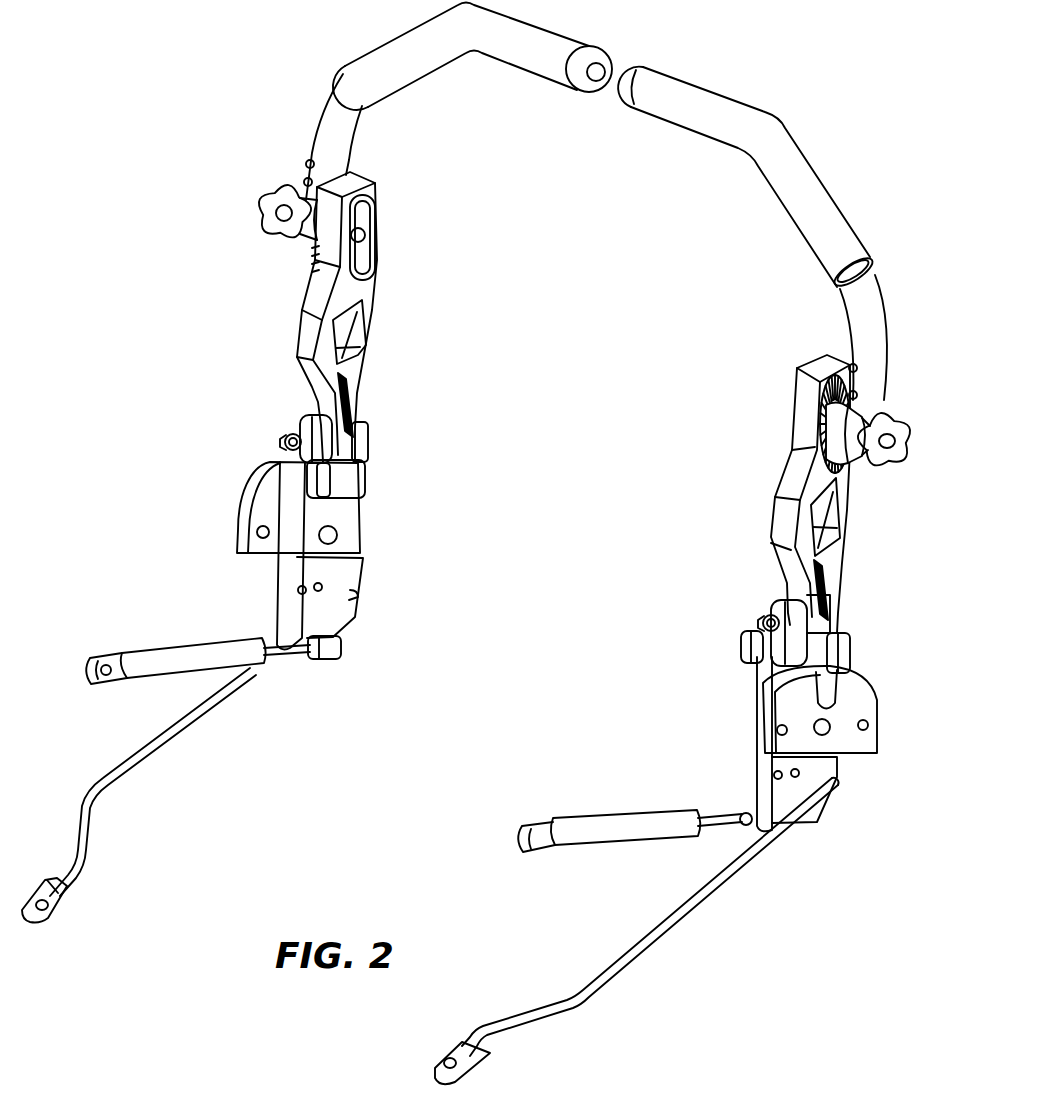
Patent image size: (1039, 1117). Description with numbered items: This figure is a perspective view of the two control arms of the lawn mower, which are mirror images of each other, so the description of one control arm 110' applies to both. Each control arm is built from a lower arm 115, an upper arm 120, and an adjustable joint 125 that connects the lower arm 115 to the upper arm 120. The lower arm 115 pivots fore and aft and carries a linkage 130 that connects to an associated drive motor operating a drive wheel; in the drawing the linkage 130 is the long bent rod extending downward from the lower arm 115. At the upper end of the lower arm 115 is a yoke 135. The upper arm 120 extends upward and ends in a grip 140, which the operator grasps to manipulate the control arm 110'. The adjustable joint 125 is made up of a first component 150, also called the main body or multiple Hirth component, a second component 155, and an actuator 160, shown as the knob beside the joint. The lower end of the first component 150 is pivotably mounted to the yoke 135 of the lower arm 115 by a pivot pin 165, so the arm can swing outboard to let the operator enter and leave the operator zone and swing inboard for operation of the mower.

The left control arm 110' is at (690, 576).
The lower arm 115 is at (773, 667).
The upper arm 120 is at (877, 303).
The adjustable joint 125 is at (731, 603).
The linkage 130 is at (640, 950).
The yoke 135 is at (740, 643).
The grip 140 is at (695, 122).
The first component 150 is at (828, 558).
The second component 155 is at (843, 438).
The actuator 160 is at (897, 460).
The pivot pin 165 is at (758, 614).